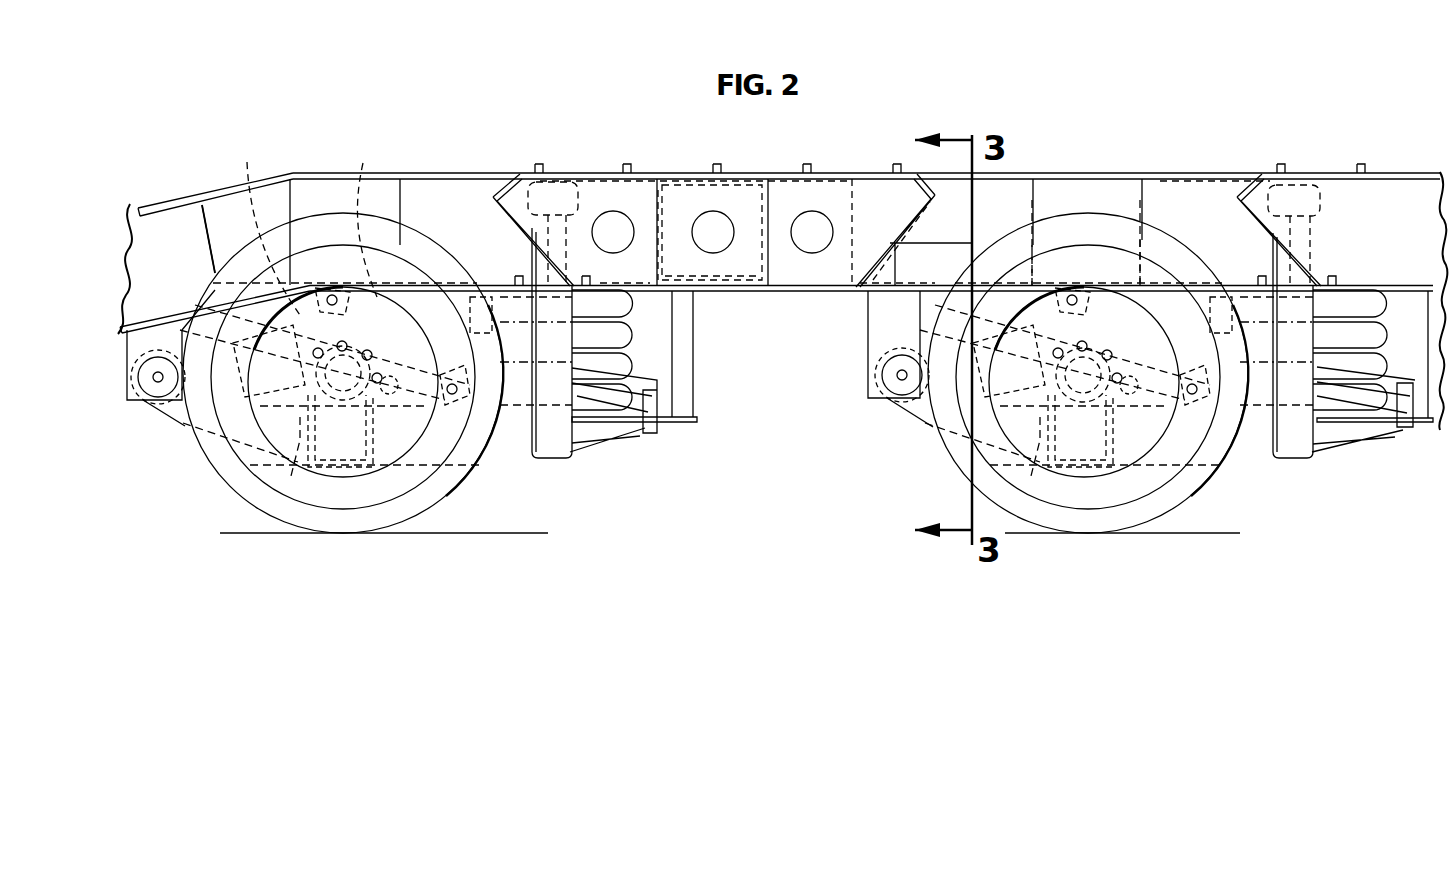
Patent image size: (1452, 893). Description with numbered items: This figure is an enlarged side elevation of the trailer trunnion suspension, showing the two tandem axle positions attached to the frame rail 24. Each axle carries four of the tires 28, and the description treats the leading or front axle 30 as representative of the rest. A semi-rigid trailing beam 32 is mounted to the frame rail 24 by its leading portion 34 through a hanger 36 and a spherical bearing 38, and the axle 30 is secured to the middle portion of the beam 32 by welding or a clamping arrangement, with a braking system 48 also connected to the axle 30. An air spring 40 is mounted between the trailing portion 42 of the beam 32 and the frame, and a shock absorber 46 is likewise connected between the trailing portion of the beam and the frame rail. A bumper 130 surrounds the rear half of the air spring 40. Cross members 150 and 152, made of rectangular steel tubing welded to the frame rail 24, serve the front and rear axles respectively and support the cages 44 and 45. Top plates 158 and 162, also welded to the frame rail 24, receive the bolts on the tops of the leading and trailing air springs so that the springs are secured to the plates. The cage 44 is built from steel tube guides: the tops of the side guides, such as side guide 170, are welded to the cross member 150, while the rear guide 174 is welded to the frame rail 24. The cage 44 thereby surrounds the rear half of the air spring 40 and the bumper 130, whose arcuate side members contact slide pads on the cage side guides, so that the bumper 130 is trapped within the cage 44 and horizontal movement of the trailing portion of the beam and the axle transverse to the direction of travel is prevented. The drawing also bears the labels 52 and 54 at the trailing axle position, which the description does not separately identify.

The frame rail 24 is at (421, 174).
The tire 28 is at (455, 505).
The axle 30 is at (265, 482).
The trailing beam 32 is at (501, 487).
The leading portion 34 is at (177, 428).
The hanger 36 is at (165, 337).
The spherical bearing 38 is at (147, 402).
The air spring 40 is at (637, 290).
The trailing portion 42 is at (613, 440).
The cage 44 is at (707, 388).
The cage 45 is at (1437, 432).
The shock absorber 46 is at (365, 217).
The braking system 48 is at (273, 228).
The hanger bracket 52 is at (872, 330).
The axle 54 is at (930, 440).
The bumper 130 is at (645, 378).
The cross member 150 is at (550, 180).
The cross member 152 is at (1293, 182).
The top plate 158 is at (500, 282).
The top plate 162 is at (1247, 283).
The side guide 170 is at (522, 345).
The rear guide 174 is at (700, 398).